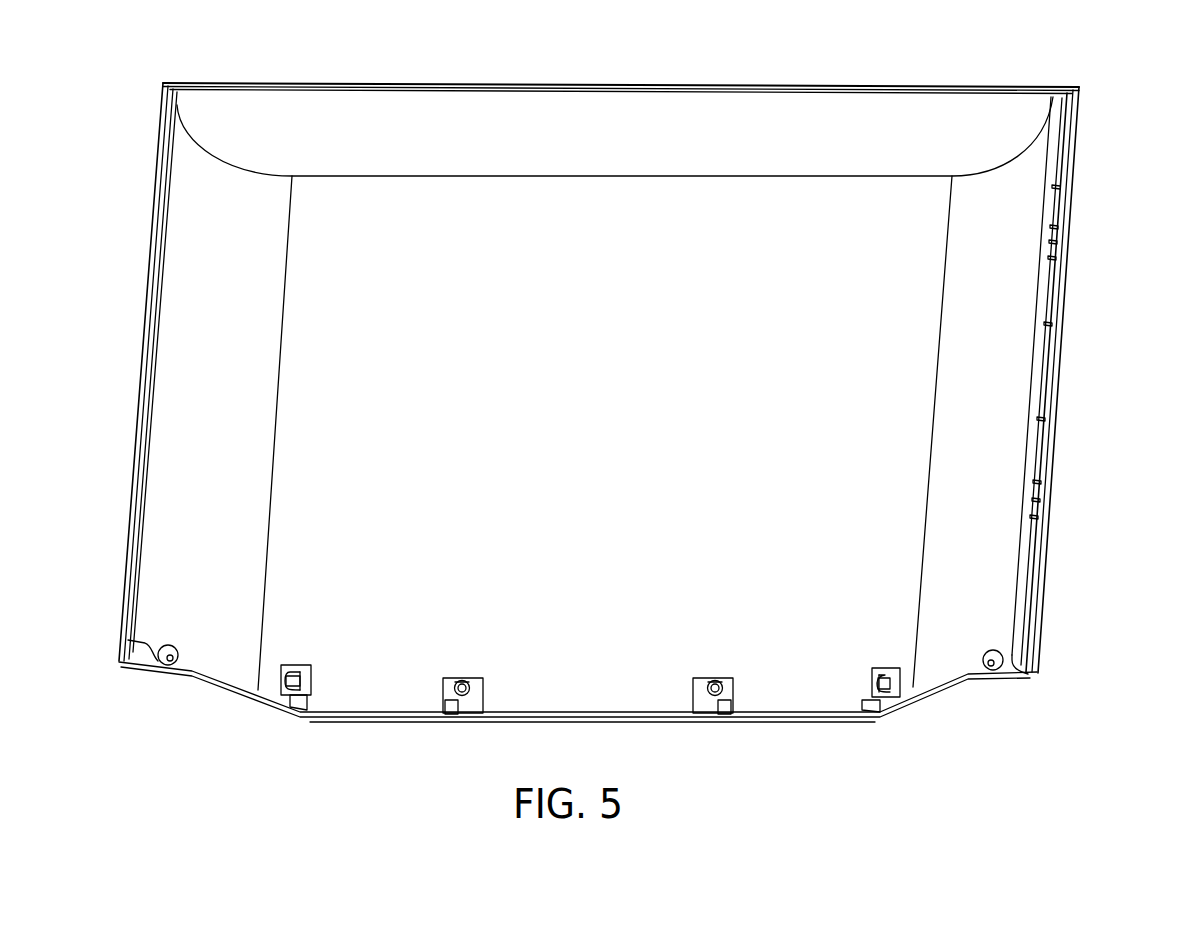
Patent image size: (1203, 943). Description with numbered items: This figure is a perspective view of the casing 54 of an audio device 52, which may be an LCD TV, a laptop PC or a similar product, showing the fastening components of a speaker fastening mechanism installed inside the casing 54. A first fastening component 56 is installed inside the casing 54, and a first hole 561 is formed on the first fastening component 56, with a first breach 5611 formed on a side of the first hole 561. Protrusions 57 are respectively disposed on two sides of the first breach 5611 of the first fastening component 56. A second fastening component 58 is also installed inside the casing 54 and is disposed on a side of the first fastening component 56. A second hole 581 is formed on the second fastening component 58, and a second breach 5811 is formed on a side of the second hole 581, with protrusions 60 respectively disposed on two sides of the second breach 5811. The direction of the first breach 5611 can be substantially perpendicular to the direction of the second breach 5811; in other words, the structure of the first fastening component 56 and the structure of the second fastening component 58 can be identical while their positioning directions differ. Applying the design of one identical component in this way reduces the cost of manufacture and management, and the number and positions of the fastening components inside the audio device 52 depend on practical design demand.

The audio device 52 is at (1100, 117).
The casing 54 is at (1062, 350).
The first fastening component 56 is at (296, 688).
The protrusions 57 is at (300, 672).
The second fastening component 58 is at (480, 697).
The protrusions 60 is at (455, 680).
The first hole 561 is at (312, 691).
The first breach 5611 is at (310, 686).
The second hole 581 is at (464, 690).
The second breach 5811 is at (462, 690).